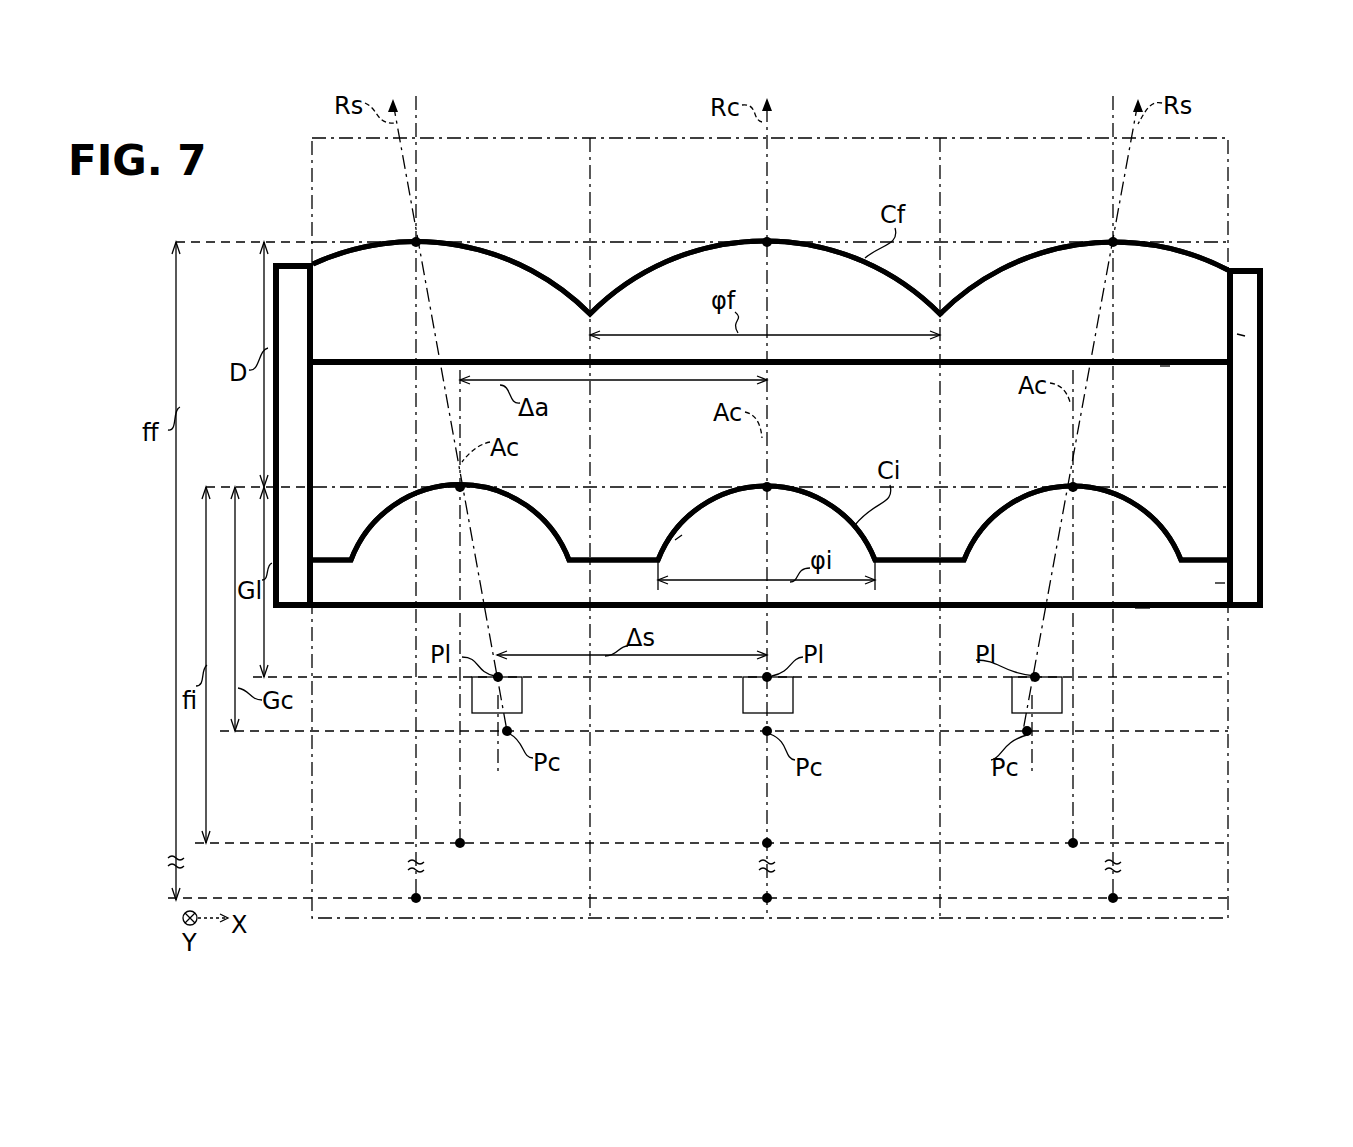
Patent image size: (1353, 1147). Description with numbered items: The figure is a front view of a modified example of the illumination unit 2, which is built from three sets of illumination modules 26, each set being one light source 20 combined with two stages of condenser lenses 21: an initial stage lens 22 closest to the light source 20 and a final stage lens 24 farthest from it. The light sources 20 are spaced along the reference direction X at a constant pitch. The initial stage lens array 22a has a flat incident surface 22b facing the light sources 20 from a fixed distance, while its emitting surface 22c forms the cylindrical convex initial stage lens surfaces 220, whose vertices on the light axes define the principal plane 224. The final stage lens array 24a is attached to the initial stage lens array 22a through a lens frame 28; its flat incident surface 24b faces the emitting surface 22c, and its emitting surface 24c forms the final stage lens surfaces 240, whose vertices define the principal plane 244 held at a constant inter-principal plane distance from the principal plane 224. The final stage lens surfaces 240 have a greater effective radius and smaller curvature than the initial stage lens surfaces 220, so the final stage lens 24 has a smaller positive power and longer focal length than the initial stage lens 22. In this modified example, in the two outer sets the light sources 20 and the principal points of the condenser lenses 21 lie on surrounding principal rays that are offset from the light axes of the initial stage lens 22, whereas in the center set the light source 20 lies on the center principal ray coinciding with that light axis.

The illumination unit 2 is at (1243, 170).
The light source 20 is at (524, 692).
The condenser lenses 21 is at (764, 364).
The initial stage lens 22 is at (395, 535).
The final stage lens 24 is at (438, 262).
The illumination module 26 is at (305, 162).
The lens frame 28 is at (1245, 394).
The initial stage lens surfaces 220 is at (540, 530).
The principal plane of the initial stage lens 224 is at (328, 487).
The final stage lens surfaces 240 is at (470, 242).
The principal plane of the final stage lens 244 is at (322, 240).
The final stage lens array 24a is at (1237, 334).
The incident surface of the final stage lens array 24b is at (1165, 365).
The emitting surface of the final stage lens array 24c is at (943, 300).
The initial stage lens array 22a is at (1215, 583).
The incident surface of the initial stage lens array 22b is at (1142, 606).
The emitting surface of the initial stage lens array 22c is at (678, 540).